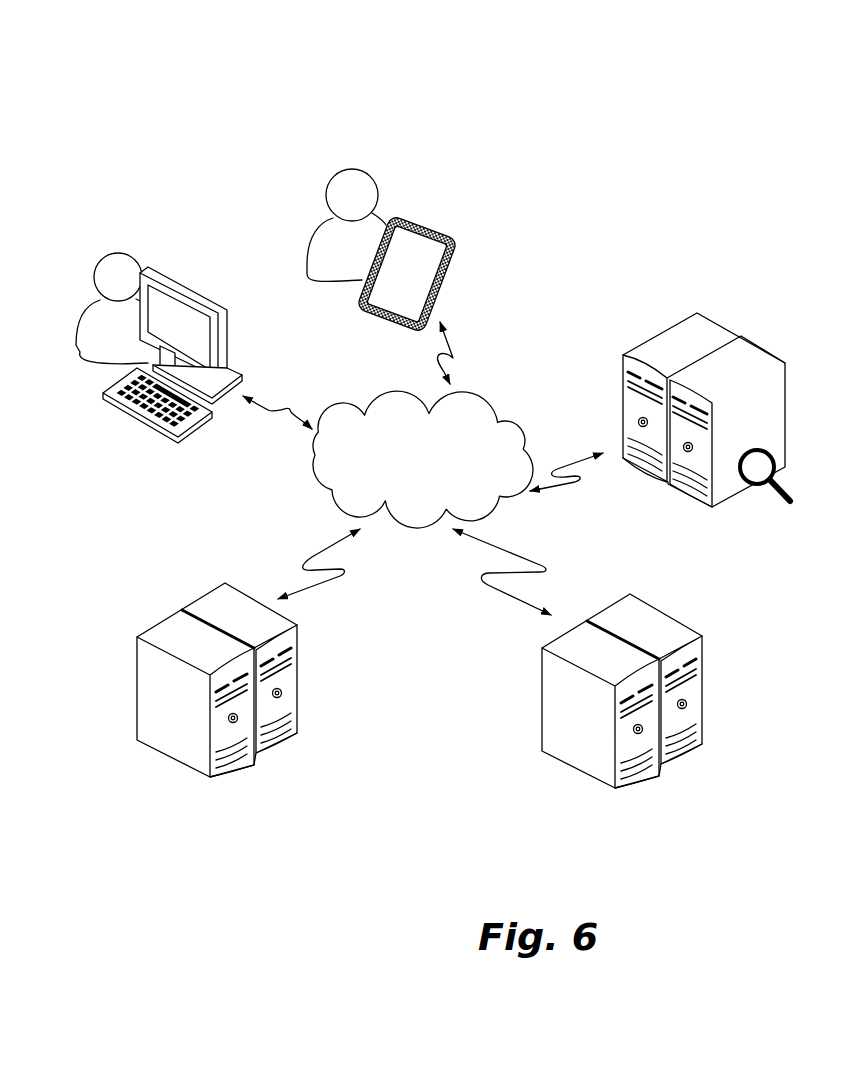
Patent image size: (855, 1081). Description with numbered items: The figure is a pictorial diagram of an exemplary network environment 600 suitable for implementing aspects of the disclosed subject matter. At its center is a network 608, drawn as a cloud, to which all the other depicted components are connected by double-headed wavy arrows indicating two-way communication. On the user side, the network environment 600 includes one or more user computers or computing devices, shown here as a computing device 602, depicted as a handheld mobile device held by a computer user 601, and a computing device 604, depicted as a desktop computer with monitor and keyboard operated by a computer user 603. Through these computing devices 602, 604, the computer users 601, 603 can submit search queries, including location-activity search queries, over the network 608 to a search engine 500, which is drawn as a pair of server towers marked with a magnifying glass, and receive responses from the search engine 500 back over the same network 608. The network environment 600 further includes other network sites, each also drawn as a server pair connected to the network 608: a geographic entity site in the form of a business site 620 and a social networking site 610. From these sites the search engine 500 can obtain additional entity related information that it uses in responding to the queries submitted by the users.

The network environment 600 is at (142, 114).
The computer user 601 is at (342, 193).
The computing device 602 is at (455, 233).
The computer user 603 is at (127, 261).
The computing device 604 is at (172, 281).
The network 608 is at (405, 481).
The search engine 500 is at (733, 331).
The social networking site 610 is at (678, 765).
The business site 620 is at (210, 778).